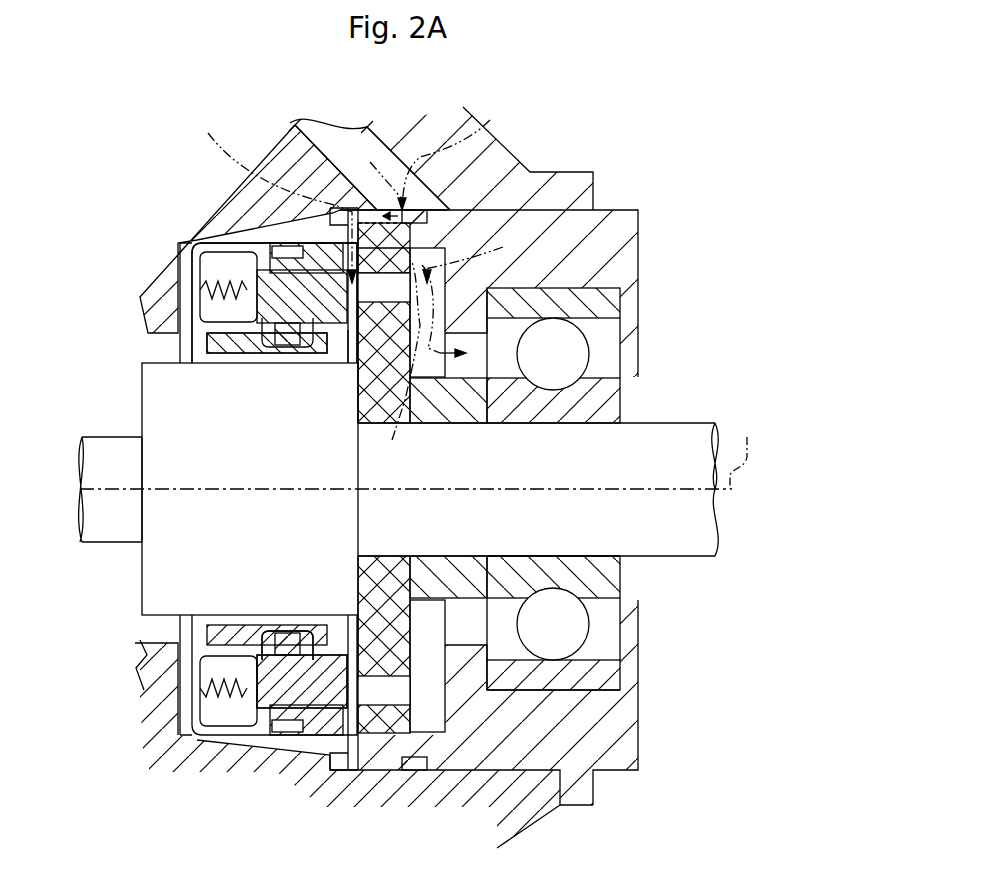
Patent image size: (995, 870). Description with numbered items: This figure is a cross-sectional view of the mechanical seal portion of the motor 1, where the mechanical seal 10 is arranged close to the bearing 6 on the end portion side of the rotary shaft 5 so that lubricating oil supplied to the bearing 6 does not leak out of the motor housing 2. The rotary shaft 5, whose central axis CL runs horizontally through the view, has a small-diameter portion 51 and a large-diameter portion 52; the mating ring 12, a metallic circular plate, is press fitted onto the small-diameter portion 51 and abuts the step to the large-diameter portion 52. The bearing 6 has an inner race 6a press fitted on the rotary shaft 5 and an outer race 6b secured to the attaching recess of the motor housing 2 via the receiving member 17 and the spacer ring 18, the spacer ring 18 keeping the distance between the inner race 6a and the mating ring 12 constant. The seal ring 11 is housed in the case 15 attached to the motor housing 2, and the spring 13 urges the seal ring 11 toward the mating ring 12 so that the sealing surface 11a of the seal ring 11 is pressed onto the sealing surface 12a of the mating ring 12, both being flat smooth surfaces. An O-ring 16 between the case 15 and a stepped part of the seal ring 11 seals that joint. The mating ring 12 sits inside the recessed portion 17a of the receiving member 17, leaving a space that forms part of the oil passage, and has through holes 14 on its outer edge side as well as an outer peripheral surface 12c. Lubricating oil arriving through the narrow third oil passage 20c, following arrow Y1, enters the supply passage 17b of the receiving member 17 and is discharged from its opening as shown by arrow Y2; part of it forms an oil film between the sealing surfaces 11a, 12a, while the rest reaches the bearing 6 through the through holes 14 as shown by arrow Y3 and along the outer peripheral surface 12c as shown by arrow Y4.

The motor 1 is at (38, 104).
The motor housing 2 is at (150, 660).
The rotary shaft 5 is at (92, 477).
The bearing 6 is at (605, 354).
The inner race 6a is at (607, 570).
The outer race 6b is at (610, 677).
The mechanical seal 10 is at (352, 608).
The seal ring 11 is at (277, 710).
The sealing surface 11a is at (362, 405).
The mating ring 12 is at (385, 713).
The sealing surface 12a is at (316, 358).
The outer peripheral surface 12c is at (380, 257).
The spring 13 is at (197, 258).
The through holes 14 is at (405, 697).
The case 15 is at (207, 340).
The O-ring 16 is at (283, 640).
The receiving member 17 is at (613, 232).
The recessed portion 17a is at (437, 310).
The supply passage 17b is at (420, 207).
The spacer ring 18 is at (450, 415).
The third oil passage 20c is at (368, 126).
The small-diameter portion 51 is at (667, 458).
The large-diameter portion 52 is at (193, 551).
The central axis CL is at (737, 449).
The arrow Y1 is at (443, 156).
The arrow Y2 is at (270, 197).
The arrow Y3 is at (397, 364).
The arrow Y4 is at (474, 294).